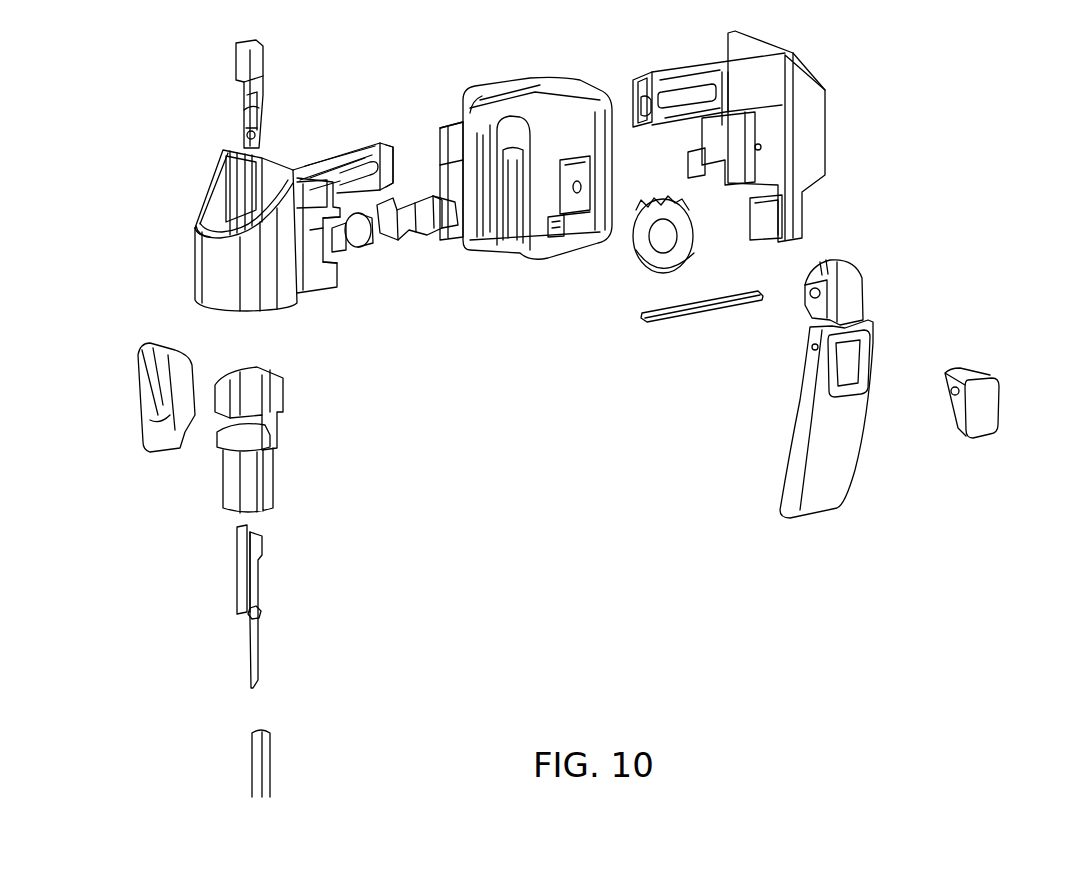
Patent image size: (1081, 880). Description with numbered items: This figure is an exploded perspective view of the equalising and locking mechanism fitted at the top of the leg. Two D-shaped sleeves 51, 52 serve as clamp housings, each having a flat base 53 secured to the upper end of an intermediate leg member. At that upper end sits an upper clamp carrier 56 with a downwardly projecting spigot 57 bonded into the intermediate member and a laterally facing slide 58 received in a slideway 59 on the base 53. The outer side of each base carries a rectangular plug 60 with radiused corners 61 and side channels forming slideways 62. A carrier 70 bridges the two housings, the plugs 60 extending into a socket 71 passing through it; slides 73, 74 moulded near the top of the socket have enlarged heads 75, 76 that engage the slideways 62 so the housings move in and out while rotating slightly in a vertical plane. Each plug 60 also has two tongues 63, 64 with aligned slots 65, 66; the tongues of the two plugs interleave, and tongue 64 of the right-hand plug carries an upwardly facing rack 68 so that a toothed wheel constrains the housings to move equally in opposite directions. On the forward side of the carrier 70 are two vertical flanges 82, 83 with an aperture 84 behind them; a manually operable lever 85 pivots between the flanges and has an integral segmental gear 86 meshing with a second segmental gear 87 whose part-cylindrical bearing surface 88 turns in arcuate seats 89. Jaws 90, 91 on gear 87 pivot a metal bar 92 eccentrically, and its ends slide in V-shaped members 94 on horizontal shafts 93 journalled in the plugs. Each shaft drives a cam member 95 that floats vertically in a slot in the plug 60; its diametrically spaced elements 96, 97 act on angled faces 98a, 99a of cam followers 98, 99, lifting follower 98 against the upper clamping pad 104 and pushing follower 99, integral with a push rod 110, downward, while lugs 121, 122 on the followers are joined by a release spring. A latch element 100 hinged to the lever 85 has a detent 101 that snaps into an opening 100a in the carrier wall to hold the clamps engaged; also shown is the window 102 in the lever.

The sleeve 51 is at (216, 228).
The sleeve 52 is at (729, 134).
The flat base 53 is at (245, 175).
The upper clamp carrier 56 is at (280, 440).
The spigot 57 is at (275, 480).
The slide 58 is at (290, 392).
The slideway 59 is at (198, 228).
The plug 60 is at (460, 106).
The radiused corners 61 is at (312, 165).
The slideways 62 is at (295, 195).
The tongue 63 is at (392, 165).
The tongue 64 is at (365, 160).
The slot 65 is at (380, 168).
The slot 66 is at (350, 170).
The rack 68 is at (643, 117).
The carrier 70 is at (497, 90).
The socket 71 is at (457, 195).
The slide 73 is at (500, 140).
The slide 74 is at (447, 135).
The enlarged head 75 is at (440, 165).
The enlarged head 76 is at (473, 107).
The flange 82 is at (613, 178).
The flange 83 is at (568, 220).
The aperture 84 is at (573, 173).
The manually operable lever 85 is at (831, 419).
The segmental gear 86 is at (807, 273).
The second segmental gear 87 is at (677, 177).
The part-cylindrical bearing surface 88 is at (661, 237).
The arcuate seats 89 is at (460, 193).
The jaw 90 is at (693, 253).
The jaw 91 is at (683, 230).
The metal bar 92 is at (700, 313).
The shaft 93 is at (418, 235).
The V-shaped member 94 is at (442, 237).
The cam member 95 is at (363, 242).
The cam element 96 is at (367, 242).
The cam element 97 is at (345, 255).
The upper cam follower 98 is at (240, 90).
The angled face 98a is at (253, 122).
The lower cam follower 99 is at (258, 602).
The angled face 99a is at (262, 540).
The latch element 100 is at (991, 378).
The opening 100a is at (553, 230).
The detent 101 is at (955, 375).
The window 102 is at (855, 390).
The upper clamping pad 104 is at (137, 375).
The push rod 110 is at (270, 758).
The lug 121 is at (247, 135).
The lug 122 is at (265, 612).